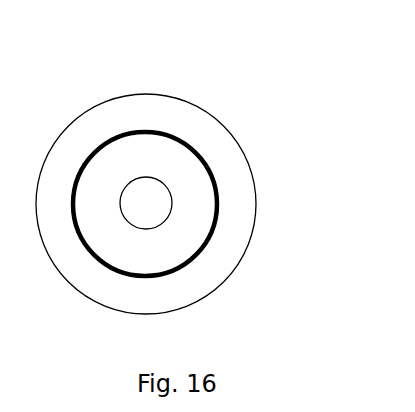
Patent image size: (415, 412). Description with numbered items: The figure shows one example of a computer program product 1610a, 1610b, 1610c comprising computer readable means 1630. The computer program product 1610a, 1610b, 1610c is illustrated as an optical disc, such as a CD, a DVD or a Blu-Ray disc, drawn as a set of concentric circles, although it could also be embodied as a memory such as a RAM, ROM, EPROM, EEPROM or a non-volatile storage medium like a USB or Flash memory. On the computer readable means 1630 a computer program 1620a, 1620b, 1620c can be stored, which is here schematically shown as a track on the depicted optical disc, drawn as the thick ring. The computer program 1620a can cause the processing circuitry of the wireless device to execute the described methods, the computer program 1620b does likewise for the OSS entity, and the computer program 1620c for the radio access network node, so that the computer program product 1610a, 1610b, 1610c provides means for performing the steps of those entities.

The computer program product 1610a is at (207, 170).
The computer program product 1610b is at (207, 184).
The computer program product 1610c is at (274, 129).
The computer program 1620a is at (221, 204).
The computer program 1620b is at (221, 204).
The computer program 1620c is at (212, 215).
The computer readable means 1630 is at (183, 293).